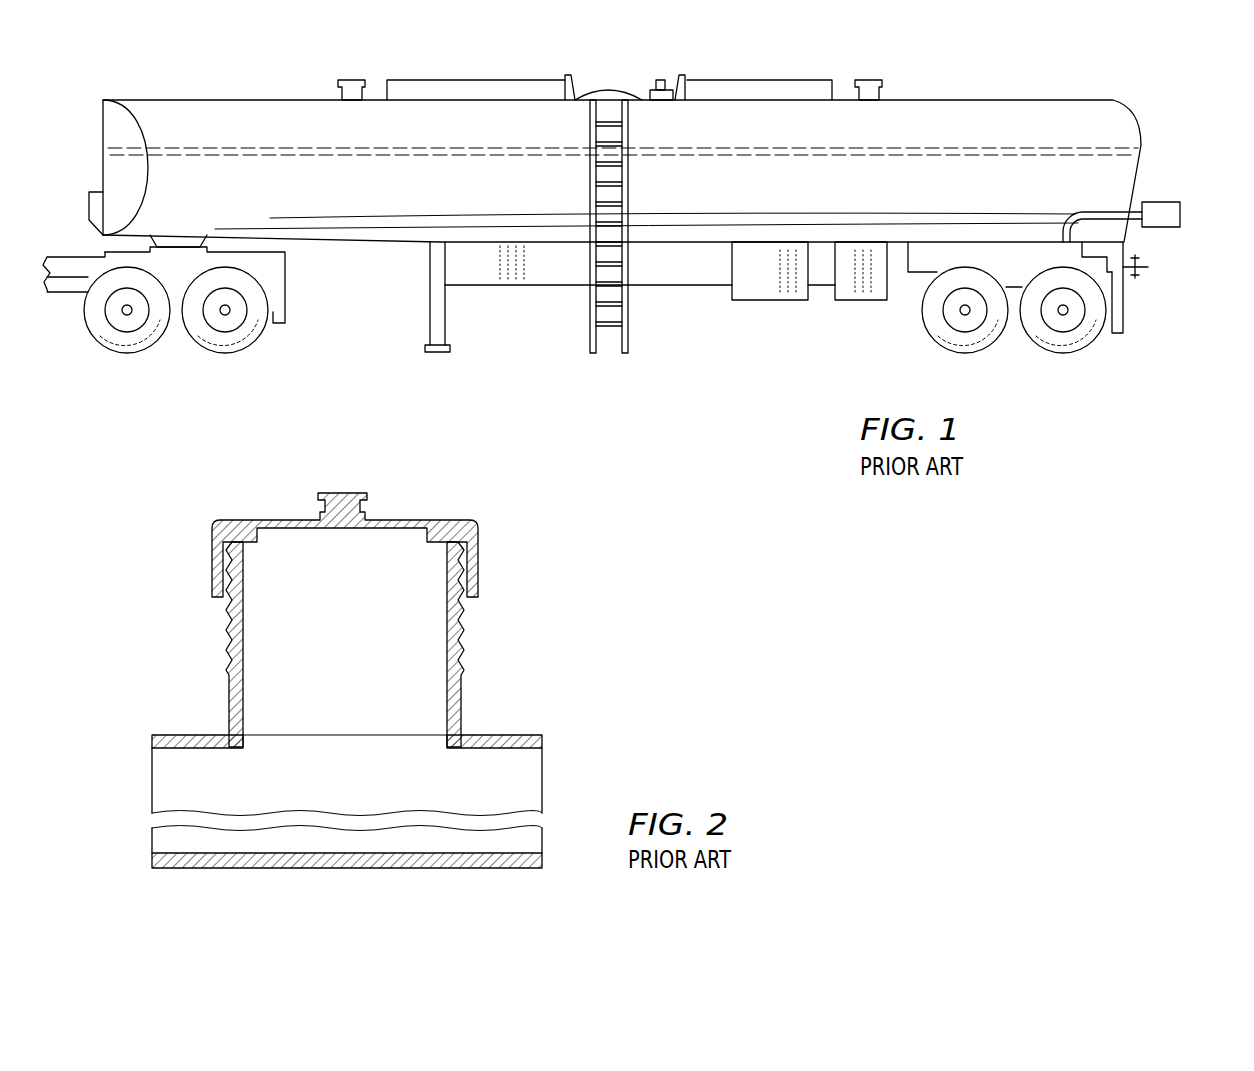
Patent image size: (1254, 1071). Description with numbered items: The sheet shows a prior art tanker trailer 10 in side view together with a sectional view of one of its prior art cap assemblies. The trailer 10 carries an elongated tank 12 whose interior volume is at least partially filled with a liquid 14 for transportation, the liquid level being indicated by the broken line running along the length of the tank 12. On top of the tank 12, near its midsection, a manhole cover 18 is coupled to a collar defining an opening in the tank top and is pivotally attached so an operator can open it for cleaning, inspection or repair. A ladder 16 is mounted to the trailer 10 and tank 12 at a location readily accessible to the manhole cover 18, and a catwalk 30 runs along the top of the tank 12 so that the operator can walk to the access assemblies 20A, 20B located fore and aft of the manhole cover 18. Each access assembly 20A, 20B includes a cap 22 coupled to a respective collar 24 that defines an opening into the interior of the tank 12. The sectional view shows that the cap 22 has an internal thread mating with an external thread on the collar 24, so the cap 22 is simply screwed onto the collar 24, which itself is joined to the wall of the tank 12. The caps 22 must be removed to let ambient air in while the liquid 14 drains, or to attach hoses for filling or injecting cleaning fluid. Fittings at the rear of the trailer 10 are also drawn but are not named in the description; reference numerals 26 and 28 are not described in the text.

In FIG. 1, the tanker trailer 10 is at (997, 85).
In FIG. 1, the tank 12 is at (1117, 100).
In FIG. 2, the tank 12 is at (205, 735).
In FIG. 1, the liquid 14 is at (226, 147).
In FIG. 1, the ladder 16 is at (632, 318).
In FIG. 1, the manhole cover 18 is at (603, 90).
In FIG. 1, the access assembly 20A is at (352, 80).
In FIG. 2, the access assembly 20A is at (418, 609).
In FIG. 1, the access assembly 20B is at (866, 80).
In FIG. 2, the access assembly 20B is at (418, 609).
In FIG. 2, the cap 22 is at (400, 520).
In FIG. 2, the collar 24 is at (465, 690).
In FIG. 1, the discharge valve 26 is at (1148, 267).
In FIG. 1, the pump / control box 28 is at (1162, 202).
In FIG. 1, the catwalk 30 is at (768, 80).